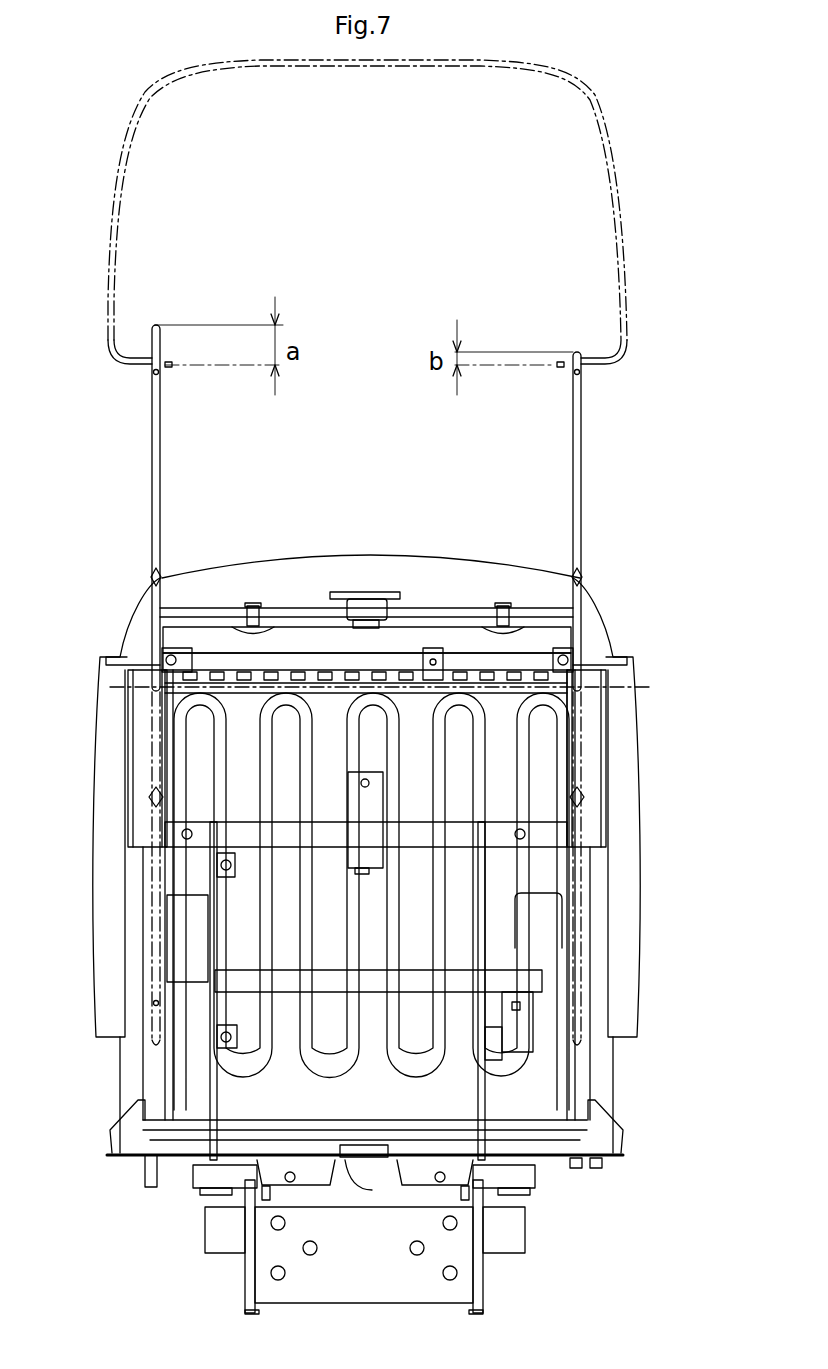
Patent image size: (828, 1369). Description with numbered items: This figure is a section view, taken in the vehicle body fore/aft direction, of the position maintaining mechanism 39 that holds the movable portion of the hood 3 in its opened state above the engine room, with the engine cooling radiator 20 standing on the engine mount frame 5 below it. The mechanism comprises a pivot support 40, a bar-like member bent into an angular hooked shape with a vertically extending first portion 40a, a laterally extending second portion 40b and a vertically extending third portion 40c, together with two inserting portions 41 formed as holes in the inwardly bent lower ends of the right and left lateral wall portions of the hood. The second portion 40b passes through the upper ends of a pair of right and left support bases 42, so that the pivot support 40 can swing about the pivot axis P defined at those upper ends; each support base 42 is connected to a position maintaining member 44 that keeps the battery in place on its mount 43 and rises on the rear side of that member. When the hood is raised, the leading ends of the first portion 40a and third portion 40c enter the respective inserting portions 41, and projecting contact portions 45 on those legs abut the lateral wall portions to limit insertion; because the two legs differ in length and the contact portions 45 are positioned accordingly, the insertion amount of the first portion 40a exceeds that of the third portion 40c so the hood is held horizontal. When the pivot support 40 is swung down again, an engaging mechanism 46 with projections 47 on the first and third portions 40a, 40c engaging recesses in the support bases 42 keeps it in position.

The hood 3 is at (600, 108).
The engine mount frame 5 is at (245, 1283).
The engine cooling radiator 20 is at (426, 640).
The position maintaining mechanism 39 is at (379, 478).
The pivot support 40 is at (379, 509).
The first portion 40a is at (152, 478).
The second portion 40b is at (328, 683).
The third portion 40c is at (581, 470).
The inserting portion 41 is at (155, 325).
The support base 42 is at (147, 727).
The mount 43 is at (365, 1175).
The position maintaining member 44 is at (293, 845).
The projecting contact portion 45 is at (152, 375).
The engaging mechanism 46 is at (147, 797).
The projection 47 is at (161, 577).
The pivot axis P is at (391, 691).